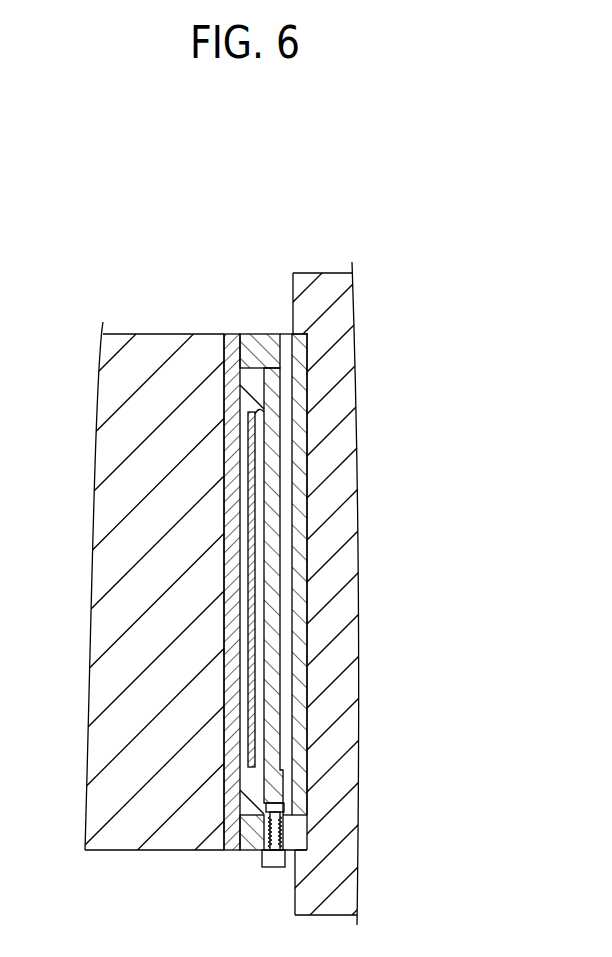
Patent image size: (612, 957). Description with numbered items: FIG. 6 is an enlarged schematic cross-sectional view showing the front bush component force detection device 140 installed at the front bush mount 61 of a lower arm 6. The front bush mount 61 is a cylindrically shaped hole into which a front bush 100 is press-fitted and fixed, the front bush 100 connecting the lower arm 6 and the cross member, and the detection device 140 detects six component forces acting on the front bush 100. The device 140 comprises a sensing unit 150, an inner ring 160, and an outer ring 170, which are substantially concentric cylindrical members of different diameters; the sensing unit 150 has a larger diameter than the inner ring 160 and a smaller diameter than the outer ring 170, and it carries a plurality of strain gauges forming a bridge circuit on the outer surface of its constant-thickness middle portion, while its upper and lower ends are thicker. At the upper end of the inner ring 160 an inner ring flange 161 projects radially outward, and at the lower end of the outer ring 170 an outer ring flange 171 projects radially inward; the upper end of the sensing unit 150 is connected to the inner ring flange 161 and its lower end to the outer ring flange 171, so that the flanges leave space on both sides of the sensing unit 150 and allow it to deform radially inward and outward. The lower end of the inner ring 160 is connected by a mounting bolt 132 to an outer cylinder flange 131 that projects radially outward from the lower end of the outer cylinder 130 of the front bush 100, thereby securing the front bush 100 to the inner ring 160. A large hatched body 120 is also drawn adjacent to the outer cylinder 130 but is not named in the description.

The lower arm 6 is at (117, 448).
The front bush mount 61 is at (226, 358).
The front bush 100 is at (306, 556).
The housing block 120 is at (342, 311).
The outer cylinder 130 is at (305, 413).
The outer cylinder flange 131 is at (288, 835).
The mounting bolt 132 is at (286, 808).
The front bush component force detection device 140 is at (247, 555).
The sensing unit 150 is at (250, 572).
The inner ring 160 is at (268, 580).
The inner ring flange 161 is at (252, 348).
The outer ring 170 is at (232, 503).
The outer ring flange 171 is at (250, 830).